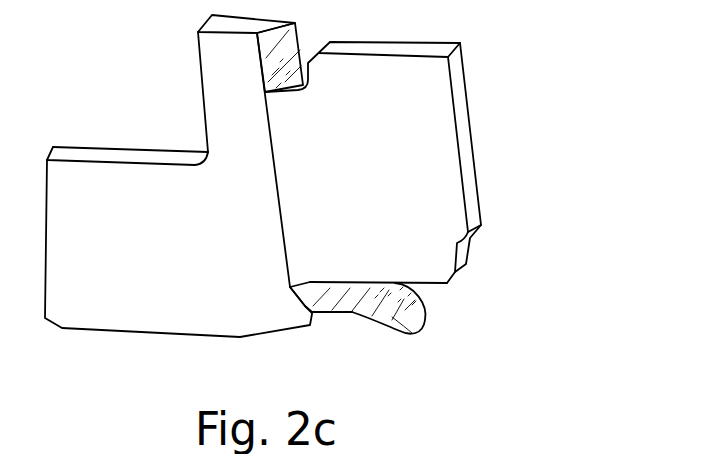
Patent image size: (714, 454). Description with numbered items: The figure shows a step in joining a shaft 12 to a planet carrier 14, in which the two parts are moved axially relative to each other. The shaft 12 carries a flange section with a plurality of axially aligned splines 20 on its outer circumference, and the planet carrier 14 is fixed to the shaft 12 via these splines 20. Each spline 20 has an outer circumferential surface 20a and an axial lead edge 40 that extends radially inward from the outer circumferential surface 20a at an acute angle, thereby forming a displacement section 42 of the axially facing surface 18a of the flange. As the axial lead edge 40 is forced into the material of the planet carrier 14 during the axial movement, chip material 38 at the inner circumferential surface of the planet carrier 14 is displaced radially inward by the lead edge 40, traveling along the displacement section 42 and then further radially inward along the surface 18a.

The shaft 12 is at (493, 158).
The planet carrier 14 is at (181, 89).
The first radially extending axially facing surface 18a is at (393, 283).
The spline 20 is at (270, 233).
The outer circumferential surface 20a is at (283, 276).
The chip material 38 is at (390, 324).
The axial lead edge 40 is at (281, 304).
The displacement section 42 is at (318, 313).